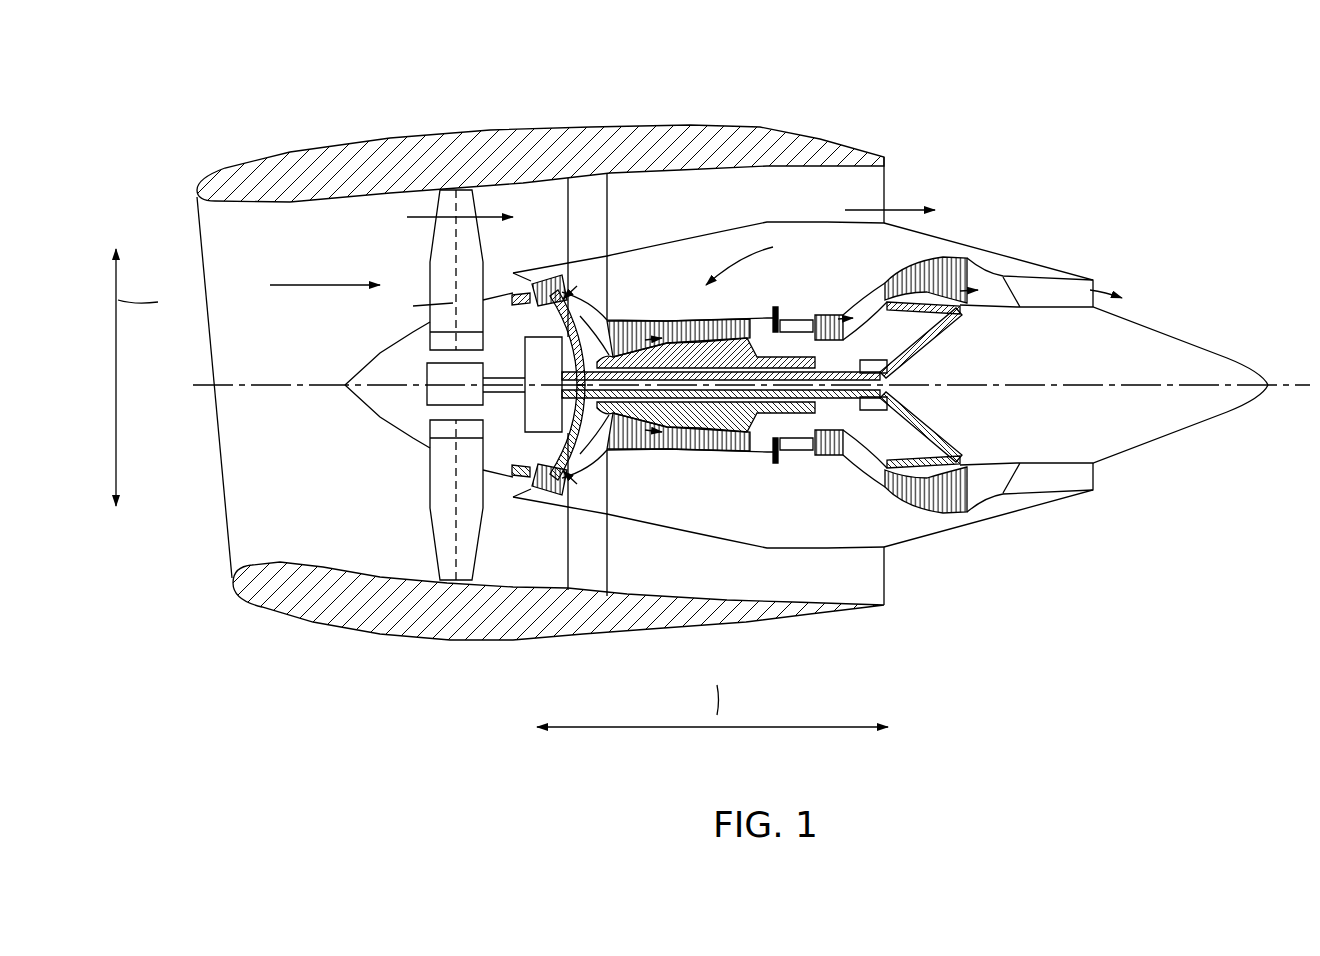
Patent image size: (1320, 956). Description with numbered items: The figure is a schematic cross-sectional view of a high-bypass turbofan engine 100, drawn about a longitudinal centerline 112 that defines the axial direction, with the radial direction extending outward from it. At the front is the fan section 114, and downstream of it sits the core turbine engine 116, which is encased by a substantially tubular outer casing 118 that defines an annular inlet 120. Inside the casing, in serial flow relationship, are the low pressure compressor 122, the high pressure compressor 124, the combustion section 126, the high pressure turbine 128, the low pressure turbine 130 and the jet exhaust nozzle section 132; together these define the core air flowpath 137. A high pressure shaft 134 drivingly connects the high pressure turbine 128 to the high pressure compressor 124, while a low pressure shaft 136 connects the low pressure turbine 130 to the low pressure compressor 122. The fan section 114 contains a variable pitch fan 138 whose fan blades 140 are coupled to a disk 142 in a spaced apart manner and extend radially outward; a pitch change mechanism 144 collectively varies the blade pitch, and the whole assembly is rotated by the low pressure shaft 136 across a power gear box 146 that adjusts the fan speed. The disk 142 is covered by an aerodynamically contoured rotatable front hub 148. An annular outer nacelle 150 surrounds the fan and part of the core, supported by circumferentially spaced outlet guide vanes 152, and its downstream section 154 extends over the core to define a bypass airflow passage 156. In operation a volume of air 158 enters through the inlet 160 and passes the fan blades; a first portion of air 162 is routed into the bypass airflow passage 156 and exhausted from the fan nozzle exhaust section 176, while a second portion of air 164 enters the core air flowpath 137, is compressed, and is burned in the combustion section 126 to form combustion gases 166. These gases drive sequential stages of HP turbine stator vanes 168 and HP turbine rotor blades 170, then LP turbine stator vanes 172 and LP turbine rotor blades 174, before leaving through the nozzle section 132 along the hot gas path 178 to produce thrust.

The gas turbine engine 100 is at (713, 394).
The longitudinal centerline 112 is at (1040, 380).
The fan section 114 is at (403, 243).
The core turbine engine 116 is at (767, 257).
The outer casing 118 is at (809, 551).
The annular inlet 120 is at (524, 482).
The low pressure compressor 122 is at (578, 492).
The high pressure compressor 124 is at (636, 446).
The combustion section 126 is at (786, 462).
The high pressure turbine 128 is at (856, 452).
The low pressure turbine 130 is at (973, 518).
The jet exhaust nozzle section 132 is at (1022, 484).
The high pressure shaft 134 is at (853, 318).
The low pressure shaft 136 is at (887, 367).
The core air flowpath 137 is at (589, 440).
The variable pitch fan 138 is at (392, 436).
The fan blades 140 is at (430, 543).
The disk 142 is at (428, 342).
The pitch change mechanism 144 is at (428, 372).
The power gear box 146 is at (541, 336).
The front hub 148 is at (360, 393).
The outer nacelle 150 is at (453, 643).
The outlet guide vanes 152 is at (612, 208).
The downstream section 154 is at (760, 128).
The bypass airflow passage 156 is at (777, 207).
The volume of air 158 is at (318, 282).
The inlet 160 is at (228, 550).
The first portion of air 162 is at (418, 212).
The second portion of air 164 is at (505, 284).
The combustion gases 166 is at (835, 313).
The HP turbine stator vanes 168 is at (801, 455).
The HP turbine rotor blades 170 is at (851, 442).
The LP turbine stator vanes 172 is at (908, 507).
The LP turbine rotor blades 174 is at (925, 530).
The fan nozzle exhaust section 176 is at (875, 175).
The hot gas path 178 is at (913, 258).